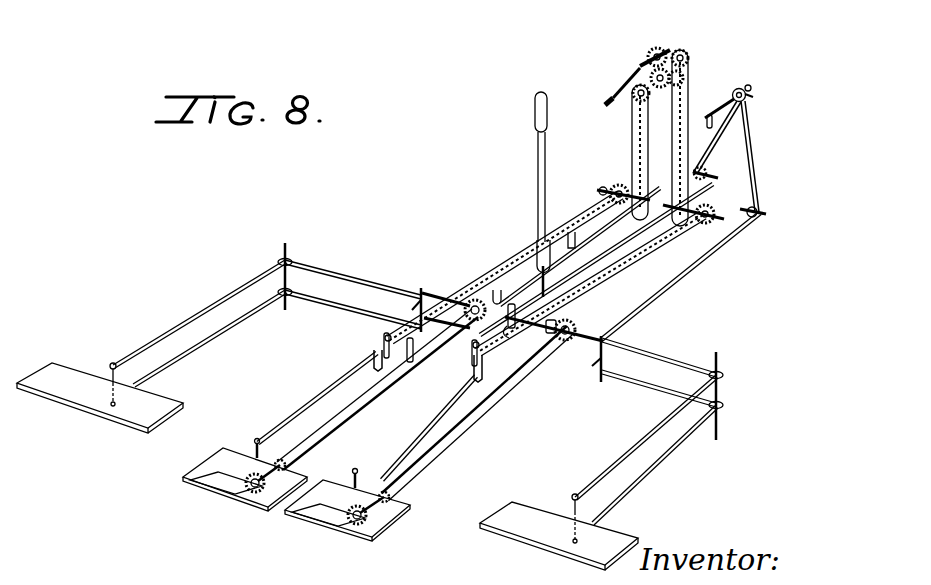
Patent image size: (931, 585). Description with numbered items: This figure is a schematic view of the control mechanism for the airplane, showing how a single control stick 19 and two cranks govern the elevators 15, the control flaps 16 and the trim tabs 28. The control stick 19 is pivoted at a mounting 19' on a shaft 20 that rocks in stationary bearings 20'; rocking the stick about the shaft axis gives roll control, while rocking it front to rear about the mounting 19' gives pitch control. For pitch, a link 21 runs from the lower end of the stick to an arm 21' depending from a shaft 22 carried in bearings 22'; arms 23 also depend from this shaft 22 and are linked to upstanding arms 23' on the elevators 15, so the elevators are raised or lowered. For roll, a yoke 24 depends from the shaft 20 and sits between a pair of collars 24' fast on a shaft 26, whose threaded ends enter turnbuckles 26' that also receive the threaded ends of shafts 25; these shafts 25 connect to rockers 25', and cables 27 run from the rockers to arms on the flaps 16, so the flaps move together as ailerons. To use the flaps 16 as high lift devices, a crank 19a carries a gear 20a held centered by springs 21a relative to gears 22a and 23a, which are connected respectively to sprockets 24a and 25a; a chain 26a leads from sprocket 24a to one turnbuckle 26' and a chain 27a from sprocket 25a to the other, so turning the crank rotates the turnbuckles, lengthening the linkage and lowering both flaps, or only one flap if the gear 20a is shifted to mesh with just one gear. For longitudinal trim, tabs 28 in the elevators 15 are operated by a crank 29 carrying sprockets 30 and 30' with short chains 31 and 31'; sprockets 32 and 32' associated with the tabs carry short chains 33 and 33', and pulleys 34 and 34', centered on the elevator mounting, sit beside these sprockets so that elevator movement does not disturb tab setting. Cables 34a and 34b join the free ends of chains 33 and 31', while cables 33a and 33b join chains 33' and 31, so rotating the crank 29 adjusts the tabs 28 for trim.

The elevators 15 is at (188, 482).
The control flaps 16 is at (128, 424).
The control stick 19 is at (522, 167).
The mounting 19' is at (580, 247).
The crank 19a is at (615, 92).
The shaft 20 is at (518, 263).
The stationary bearings 20' is at (505, 265).
The gear 20a is at (657, 48).
The link 21 is at (500, 332).
The arm 21' is at (396, 354).
The springs 21a is at (644, 60).
The shaft 22 is at (417, 310).
The bearings 22' is at (403, 354).
The gear 22a is at (669, 83).
The arms 23 is at (383, 395).
The upstanding arms 23' is at (316, 447).
The gear 23a is at (683, 76).
The yoke 24 is at (596, 260).
The collars 24' is at (520, 340).
The sprocket 24a is at (636, 102).
The shafts 25 is at (590, 255).
The rockers 25' is at (508, 322).
The sprocket 25a is at (688, 55).
The shaft 26 is at (553, 317).
The turnbuckles 26' is at (569, 287).
The chain 26a is at (632, 142).
The cables 27 is at (344, 270).
The chain 27a is at (688, 104).
The tabs 28 is at (218, 494).
The crank 29 is at (709, 128).
The sprocket 30 is at (749, 79).
The sprocket 30' is at (765, 84).
The chain 31 is at (737, 137).
The chain 31' is at (759, 156).
The sprocket 32 is at (238, 474).
The sprocket 32' is at (339, 505).
The chain 33 is at (282, 449).
The chain 33' is at (364, 473).
The cable 33a is at (500, 430).
The cable 33b is at (526, 404).
The pulley 34 is at (289, 467).
The pulley 34' is at (395, 494).
The cable 34a is at (362, 408).
The cable 34b is at (352, 414).